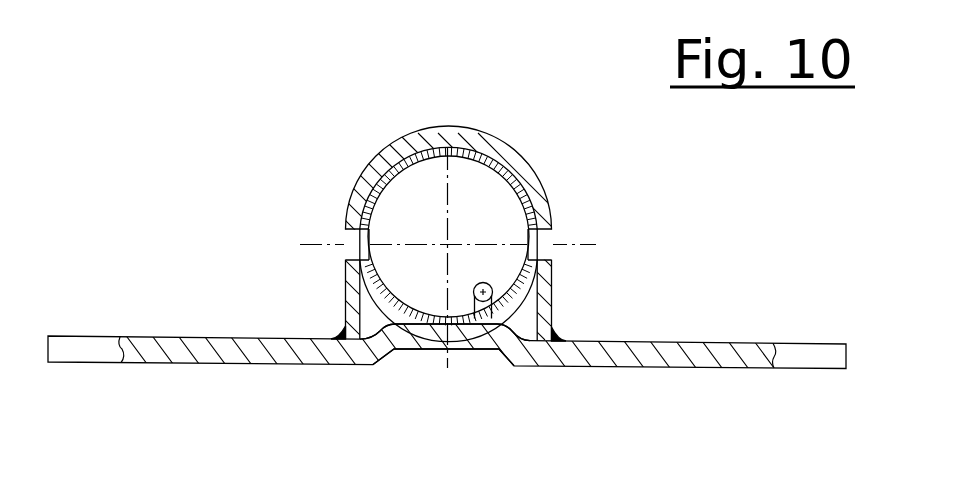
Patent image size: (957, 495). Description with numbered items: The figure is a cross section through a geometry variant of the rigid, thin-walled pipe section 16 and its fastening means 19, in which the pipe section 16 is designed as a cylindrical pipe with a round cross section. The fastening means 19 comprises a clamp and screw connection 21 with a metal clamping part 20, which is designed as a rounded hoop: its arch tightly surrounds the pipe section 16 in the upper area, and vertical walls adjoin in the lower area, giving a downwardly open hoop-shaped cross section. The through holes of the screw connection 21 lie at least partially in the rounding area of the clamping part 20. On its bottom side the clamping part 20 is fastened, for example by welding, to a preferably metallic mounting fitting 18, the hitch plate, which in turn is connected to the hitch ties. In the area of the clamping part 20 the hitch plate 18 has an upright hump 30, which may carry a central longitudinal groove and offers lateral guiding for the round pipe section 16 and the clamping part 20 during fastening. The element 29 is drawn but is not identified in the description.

The pipe section 16 is at (402, 167).
The mounting fitting 18 is at (158, 352).
The fastening means 19 is at (603, 293).
The clamping part 20 is at (362, 186).
The clamp and screw connection 21 is at (579, 206).
The fastener / pin 29 is at (482, 302).
The hump 30 is at (413, 341).